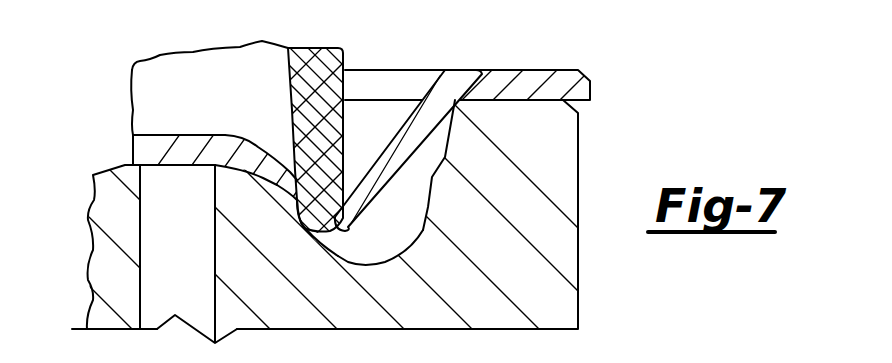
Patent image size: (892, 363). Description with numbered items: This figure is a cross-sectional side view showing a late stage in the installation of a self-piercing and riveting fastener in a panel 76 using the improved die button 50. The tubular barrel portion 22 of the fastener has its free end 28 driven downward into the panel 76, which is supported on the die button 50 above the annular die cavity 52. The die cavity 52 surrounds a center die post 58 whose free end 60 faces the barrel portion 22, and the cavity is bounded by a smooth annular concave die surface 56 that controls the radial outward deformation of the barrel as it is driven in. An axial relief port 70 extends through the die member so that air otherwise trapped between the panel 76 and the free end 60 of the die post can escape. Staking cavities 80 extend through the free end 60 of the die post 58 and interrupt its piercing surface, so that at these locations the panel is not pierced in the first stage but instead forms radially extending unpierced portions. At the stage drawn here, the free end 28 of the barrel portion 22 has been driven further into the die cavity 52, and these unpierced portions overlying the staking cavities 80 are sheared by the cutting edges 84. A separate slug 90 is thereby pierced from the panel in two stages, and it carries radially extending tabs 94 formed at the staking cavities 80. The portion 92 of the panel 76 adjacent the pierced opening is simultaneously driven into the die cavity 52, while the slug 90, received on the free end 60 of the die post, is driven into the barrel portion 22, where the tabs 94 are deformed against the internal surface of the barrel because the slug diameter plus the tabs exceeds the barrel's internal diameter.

The barrel portion 22 is at (287, 57).
The free end 28 is at (293, 222).
The die button 50 is at (500, 195).
The die cavity 52 is at (405, 228).
The annular concave die surface 56 is at (330, 262).
The center die post 58 is at (170, 183).
The free end 60 is at (241, 163).
The axial relief port 70 is at (155, 254).
The panel 76 is at (498, 78).
The staking cavities 80 is at (288, 193).
The cutting edge 84 is at (340, 152).
The slug 90 is at (187, 140).
The portion of the panel 92 is at (418, 130).
The radially extending tabs 94 is at (290, 132).